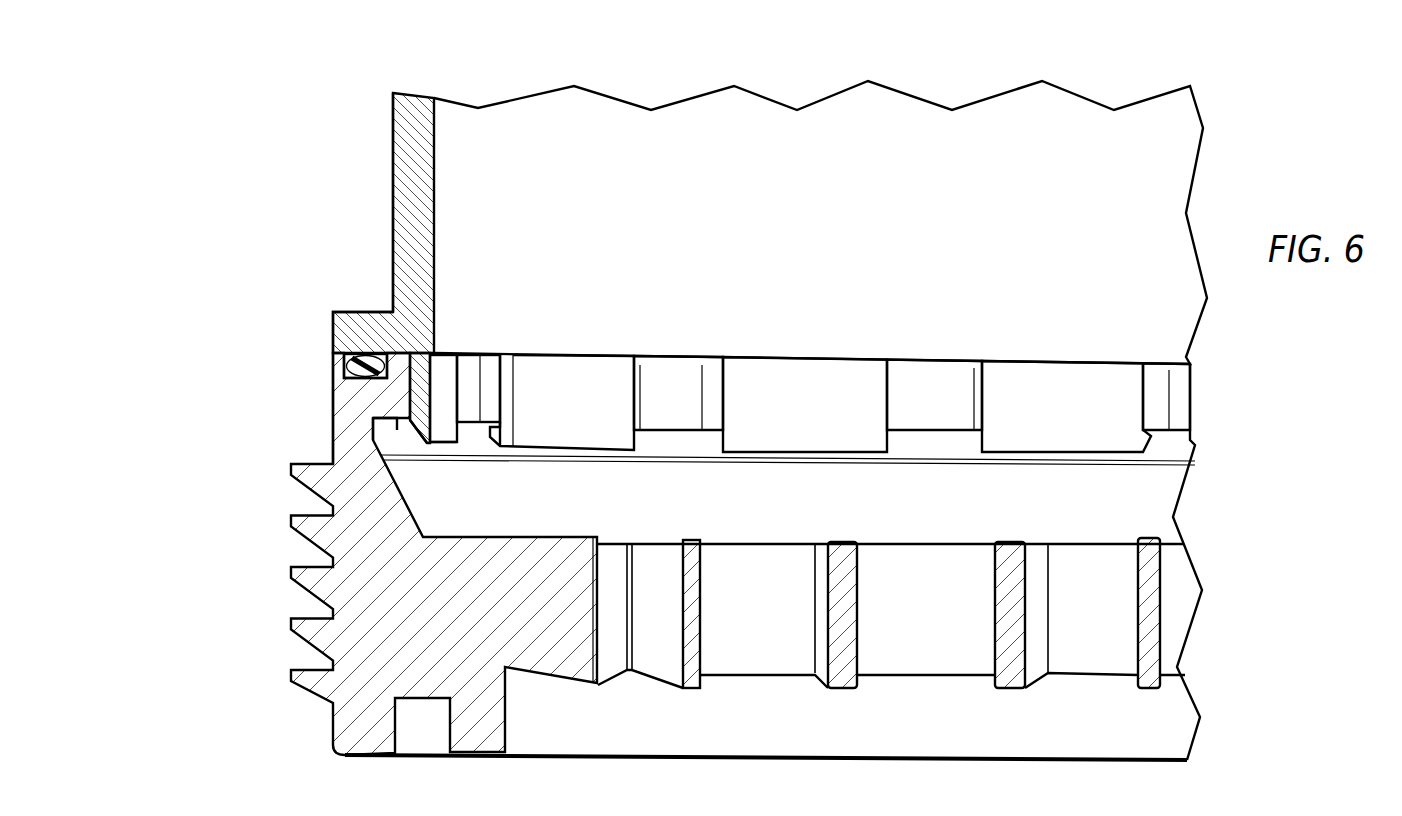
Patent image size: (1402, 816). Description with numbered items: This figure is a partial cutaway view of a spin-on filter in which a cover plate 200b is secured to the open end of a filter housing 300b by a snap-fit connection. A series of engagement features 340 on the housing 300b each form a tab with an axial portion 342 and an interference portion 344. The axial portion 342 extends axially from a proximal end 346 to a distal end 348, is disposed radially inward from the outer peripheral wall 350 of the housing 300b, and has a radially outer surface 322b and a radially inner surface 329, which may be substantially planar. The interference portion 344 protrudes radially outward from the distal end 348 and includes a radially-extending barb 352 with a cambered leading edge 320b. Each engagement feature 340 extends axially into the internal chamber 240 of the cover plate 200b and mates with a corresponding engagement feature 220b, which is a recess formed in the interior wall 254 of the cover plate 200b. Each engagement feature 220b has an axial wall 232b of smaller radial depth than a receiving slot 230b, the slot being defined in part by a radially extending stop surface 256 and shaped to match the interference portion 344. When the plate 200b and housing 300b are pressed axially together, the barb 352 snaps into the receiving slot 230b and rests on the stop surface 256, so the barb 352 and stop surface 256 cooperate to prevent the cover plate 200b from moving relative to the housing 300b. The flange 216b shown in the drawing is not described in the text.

The filter housing 300b is at (330, 119).
The outer peripheral wall 350 is at (393, 215).
The flange 216b is at (345, 340).
The proximal end 346 is at (413, 362).
The interference portion 344 is at (420, 442).
The stop surface 256 is at (360, 410).
The radially outer surface 322b is at (349, 375).
The cover plate 200b is at (256, 666).
The cambered leading edge 320b is at (372, 452).
The radially-extending barb 352 is at (372, 428).
The receiving slot 230b is at (378, 441).
The axial wall 232b is at (440, 356).
The distal end 348 is at (457, 456).
The axial portion 342 is at (506, 368).
The engagement feature 220b is at (466, 432).
The interior wall 254 is at (666, 391).
The radially inner surface 329 is at (813, 419).
The engagement feature 340 is at (893, 397).
The internal chamber 240 is at (908, 538).